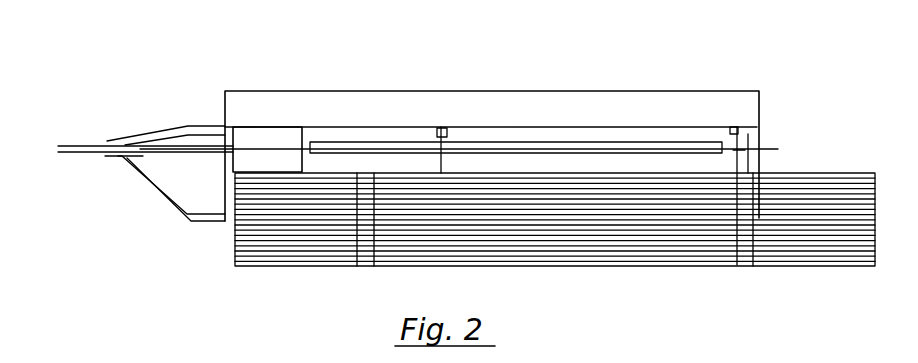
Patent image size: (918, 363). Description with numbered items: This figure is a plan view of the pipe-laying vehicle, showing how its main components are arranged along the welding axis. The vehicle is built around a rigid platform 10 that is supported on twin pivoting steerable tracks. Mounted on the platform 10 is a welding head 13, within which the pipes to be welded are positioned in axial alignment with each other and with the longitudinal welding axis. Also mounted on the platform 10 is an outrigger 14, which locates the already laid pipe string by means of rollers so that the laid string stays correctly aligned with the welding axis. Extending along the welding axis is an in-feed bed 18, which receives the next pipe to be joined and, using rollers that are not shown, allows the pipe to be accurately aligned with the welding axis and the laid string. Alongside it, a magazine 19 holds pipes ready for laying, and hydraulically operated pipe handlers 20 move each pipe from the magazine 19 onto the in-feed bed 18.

The rigid platform 10 is at (760, 136).
The welding head 13 is at (252, 143).
The outrigger 14 is at (160, 195).
The in-feed bed 18 is at (602, 140).
The magazine 19 is at (773, 258).
The pipe handlers 20 is at (445, 147).